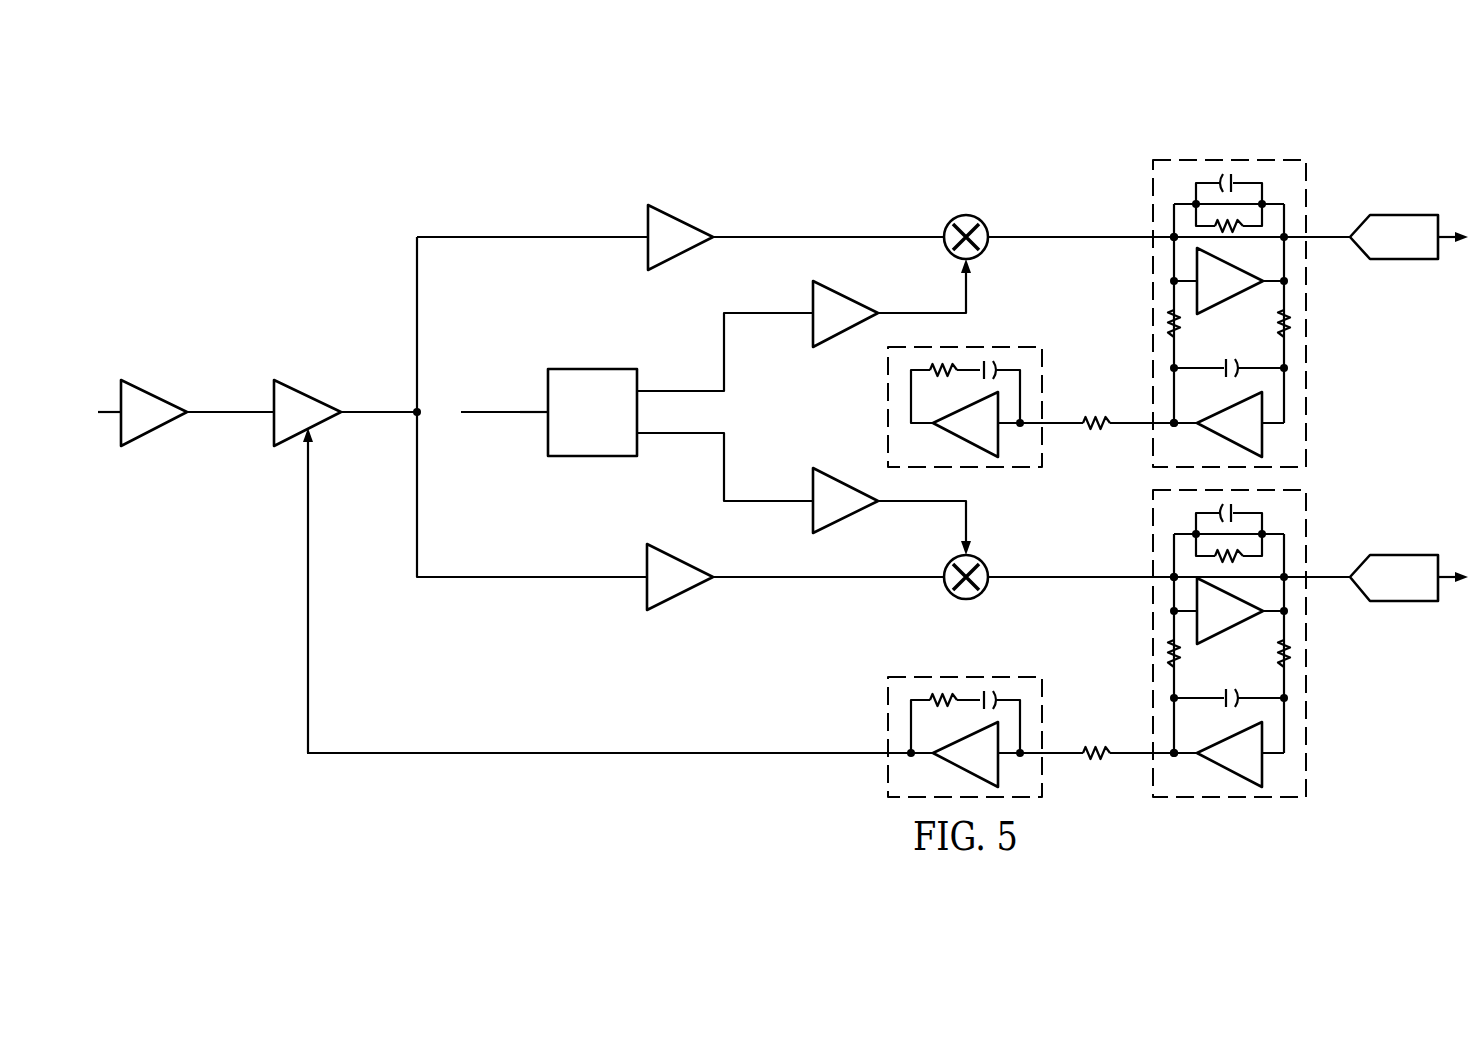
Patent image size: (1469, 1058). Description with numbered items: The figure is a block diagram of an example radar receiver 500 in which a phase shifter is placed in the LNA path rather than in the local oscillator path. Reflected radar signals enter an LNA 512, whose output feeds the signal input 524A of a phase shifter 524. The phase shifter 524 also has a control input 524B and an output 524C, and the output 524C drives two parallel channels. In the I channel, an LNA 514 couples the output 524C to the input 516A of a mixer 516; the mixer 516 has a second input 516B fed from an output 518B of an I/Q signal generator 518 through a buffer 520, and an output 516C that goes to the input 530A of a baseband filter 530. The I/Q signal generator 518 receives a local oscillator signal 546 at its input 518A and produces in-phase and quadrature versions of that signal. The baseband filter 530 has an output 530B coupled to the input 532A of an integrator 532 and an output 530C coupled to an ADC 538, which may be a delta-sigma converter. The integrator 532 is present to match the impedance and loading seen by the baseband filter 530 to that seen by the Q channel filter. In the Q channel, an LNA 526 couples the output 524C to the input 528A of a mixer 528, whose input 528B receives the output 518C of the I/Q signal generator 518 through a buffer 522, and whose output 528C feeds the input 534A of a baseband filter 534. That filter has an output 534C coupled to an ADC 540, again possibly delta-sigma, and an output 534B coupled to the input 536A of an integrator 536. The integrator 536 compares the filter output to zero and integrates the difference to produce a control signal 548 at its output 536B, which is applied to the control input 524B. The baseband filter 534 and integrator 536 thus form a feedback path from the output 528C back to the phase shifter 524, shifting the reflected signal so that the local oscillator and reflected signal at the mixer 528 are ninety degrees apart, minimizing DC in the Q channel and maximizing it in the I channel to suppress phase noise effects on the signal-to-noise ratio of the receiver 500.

The receiver 500 is at (226, 220).
The LNA 512 is at (177, 380).
The LNA 514 is at (690, 222).
The mixer 516 is at (955, 214).
The input 516A is at (935, 240).
The input 516B is at (968, 288).
The output 516C is at (996, 235).
The I/Q signal generator 518 is at (590, 368).
The IQ generator input 518A is at (525, 410).
The output 518B is at (648, 388).
The output 518C is at (648, 436).
The buffer 520 is at (840, 290).
The buffer 522 is at (840, 527).
The phase shifter 524 is at (300, 380).
The signal input 524A is at (263, 410).
The control input 524B is at (306, 457).
The output 524C is at (352, 412).
The LNA 526 is at (683, 596).
The mixer 528 is at (965, 600).
The input 528A is at (934, 575).
The input 528B is at (968, 528).
The output 528C is at (998, 583).
The baseband filter 530 is at (1312, 300).
The input 530A is at (1130, 235).
The output 530B is at (1130, 420).
The output 530C is at (1328, 235).
The integrator 532 is at (1052, 352).
The input 532A is at (1063, 427).
The baseband filter 534 is at (1314, 686).
The input 534A is at (1130, 573).
The output 534B is at (1130, 750).
The output 534C is at (1328, 580).
The integrator 536 is at (880, 704).
The input 536A is at (1063, 757).
The output 536B is at (867, 757).
The ADC 538 is at (1405, 213).
The ADC 540 is at (1403, 603).
The local oscillator signal 546 is at (505, 415).
The control signal 548 is at (517, 755).